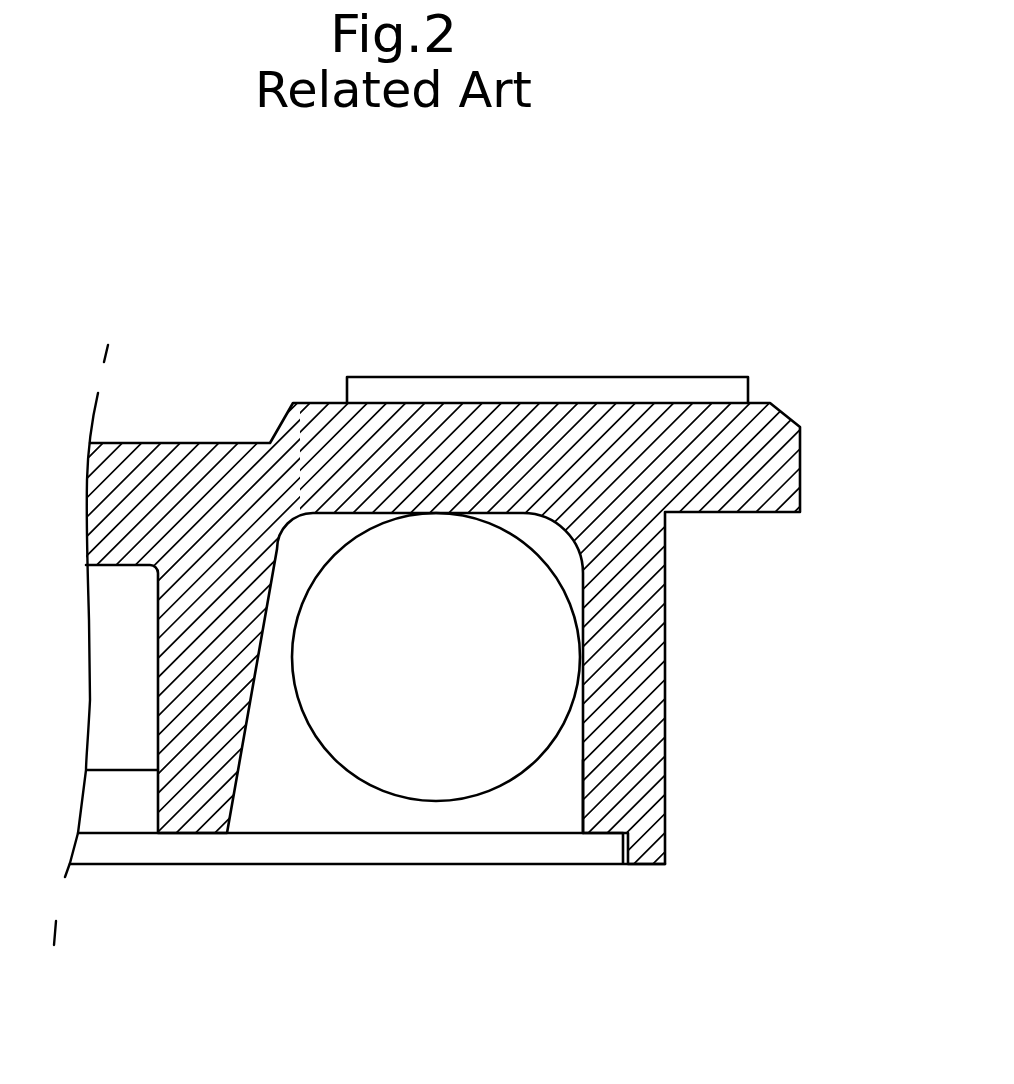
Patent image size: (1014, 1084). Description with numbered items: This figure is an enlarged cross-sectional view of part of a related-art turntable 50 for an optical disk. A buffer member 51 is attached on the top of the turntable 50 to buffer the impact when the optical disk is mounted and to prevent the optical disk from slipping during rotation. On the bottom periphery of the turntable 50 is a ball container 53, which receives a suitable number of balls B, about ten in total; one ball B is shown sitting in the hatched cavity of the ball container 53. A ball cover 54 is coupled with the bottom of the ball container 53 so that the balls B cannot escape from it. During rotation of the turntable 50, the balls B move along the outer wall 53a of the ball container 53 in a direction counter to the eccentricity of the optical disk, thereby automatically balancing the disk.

The turntable 50 is at (812, 382).
The buffer member 51 is at (562, 390).
The ball container 53 is at (530, 802).
The outer wall 53a is at (578, 782).
The ball cover 54 is at (305, 850).
The balls B is at (517, 658).